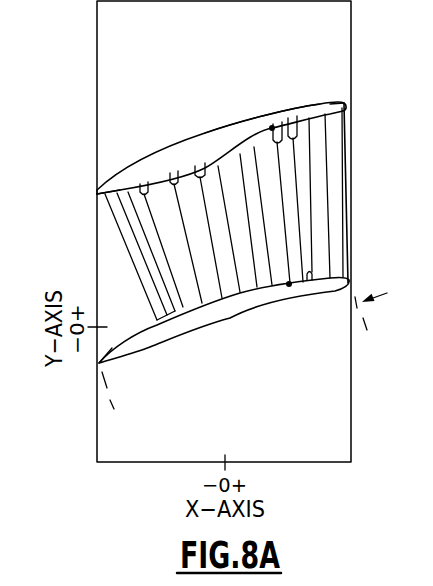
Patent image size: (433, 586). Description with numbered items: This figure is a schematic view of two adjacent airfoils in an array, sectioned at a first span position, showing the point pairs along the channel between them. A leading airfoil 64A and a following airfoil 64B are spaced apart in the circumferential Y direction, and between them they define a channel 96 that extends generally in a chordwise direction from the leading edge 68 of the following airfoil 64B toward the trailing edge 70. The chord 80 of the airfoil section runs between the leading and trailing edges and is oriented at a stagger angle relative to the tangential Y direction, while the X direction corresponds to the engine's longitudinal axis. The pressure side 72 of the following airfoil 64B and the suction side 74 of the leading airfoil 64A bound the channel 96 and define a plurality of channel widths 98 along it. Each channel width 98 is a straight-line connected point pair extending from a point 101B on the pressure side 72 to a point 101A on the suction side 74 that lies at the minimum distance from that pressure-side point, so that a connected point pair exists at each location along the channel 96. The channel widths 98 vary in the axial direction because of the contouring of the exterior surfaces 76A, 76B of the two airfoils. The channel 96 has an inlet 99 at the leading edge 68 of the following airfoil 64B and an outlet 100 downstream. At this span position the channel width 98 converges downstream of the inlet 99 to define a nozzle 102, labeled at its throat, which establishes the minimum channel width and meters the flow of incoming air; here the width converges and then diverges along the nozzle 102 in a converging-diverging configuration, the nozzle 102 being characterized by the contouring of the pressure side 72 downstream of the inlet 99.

The leading airfoil 64A is at (208, 342).
The following airfoil 64B is at (248, 104).
The leading edge 68 is at (99, 187).
The trailing edge 70 is at (345, 104).
The pressure side 72 is at (203, 165).
The suction side 74 is at (99, 348).
The exterior surface 76A is at (309, 282).
The exterior surface 76B is at (140, 185).
The chord 80 is at (89, 395).
The channel 96 is at (114, 253).
The channel width 98 is at (277, 128).
The inlet 99 is at (148, 305).
The outlet 100 is at (345, 163).
The point on suction side 101A is at (289, 285).
The point on pressure side 101B is at (272, 127).
The nozzle 102 is at (174, 178).